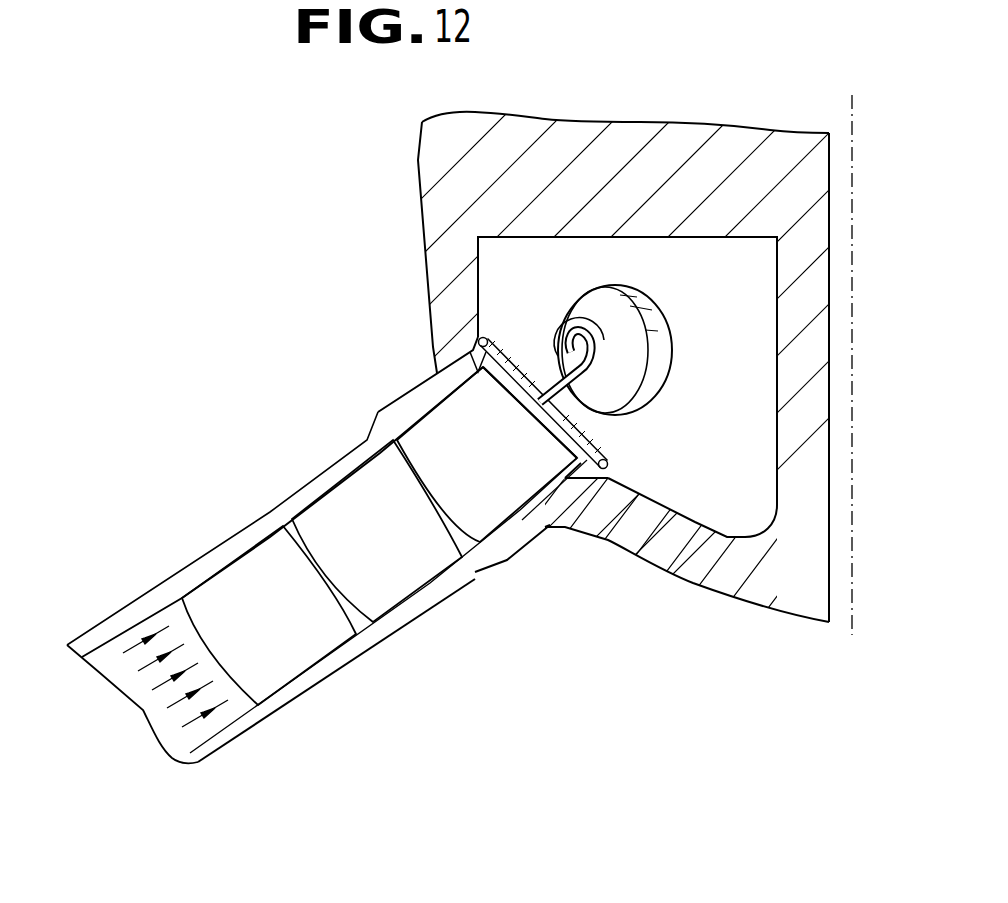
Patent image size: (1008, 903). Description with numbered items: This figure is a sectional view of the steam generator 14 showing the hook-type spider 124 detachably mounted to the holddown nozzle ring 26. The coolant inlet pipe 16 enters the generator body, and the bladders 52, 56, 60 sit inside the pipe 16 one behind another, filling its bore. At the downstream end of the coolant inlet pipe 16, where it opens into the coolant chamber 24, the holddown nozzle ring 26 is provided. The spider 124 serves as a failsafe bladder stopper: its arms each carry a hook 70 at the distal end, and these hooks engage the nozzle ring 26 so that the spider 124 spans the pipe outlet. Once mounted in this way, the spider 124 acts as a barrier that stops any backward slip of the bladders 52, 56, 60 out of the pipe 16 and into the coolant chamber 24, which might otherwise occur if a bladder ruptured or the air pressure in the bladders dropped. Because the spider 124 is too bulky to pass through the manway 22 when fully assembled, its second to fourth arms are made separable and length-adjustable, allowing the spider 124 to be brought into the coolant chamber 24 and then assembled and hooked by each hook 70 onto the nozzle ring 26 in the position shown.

The housing 14 is at (433, 173).
The coolant inlet pipe 16 is at (307, 491).
The manway 22 is at (655, 310).
The coolant chamber 24 is at (760, 437).
The holddown nozzle ring 26 is at (590, 468).
The bladder 52 is at (303, 657).
The bladder 56 is at (412, 587).
The bladder 60 is at (500, 515).
The hook 70 is at (600, 380).
The hook-type spider 124 is at (484, 332).